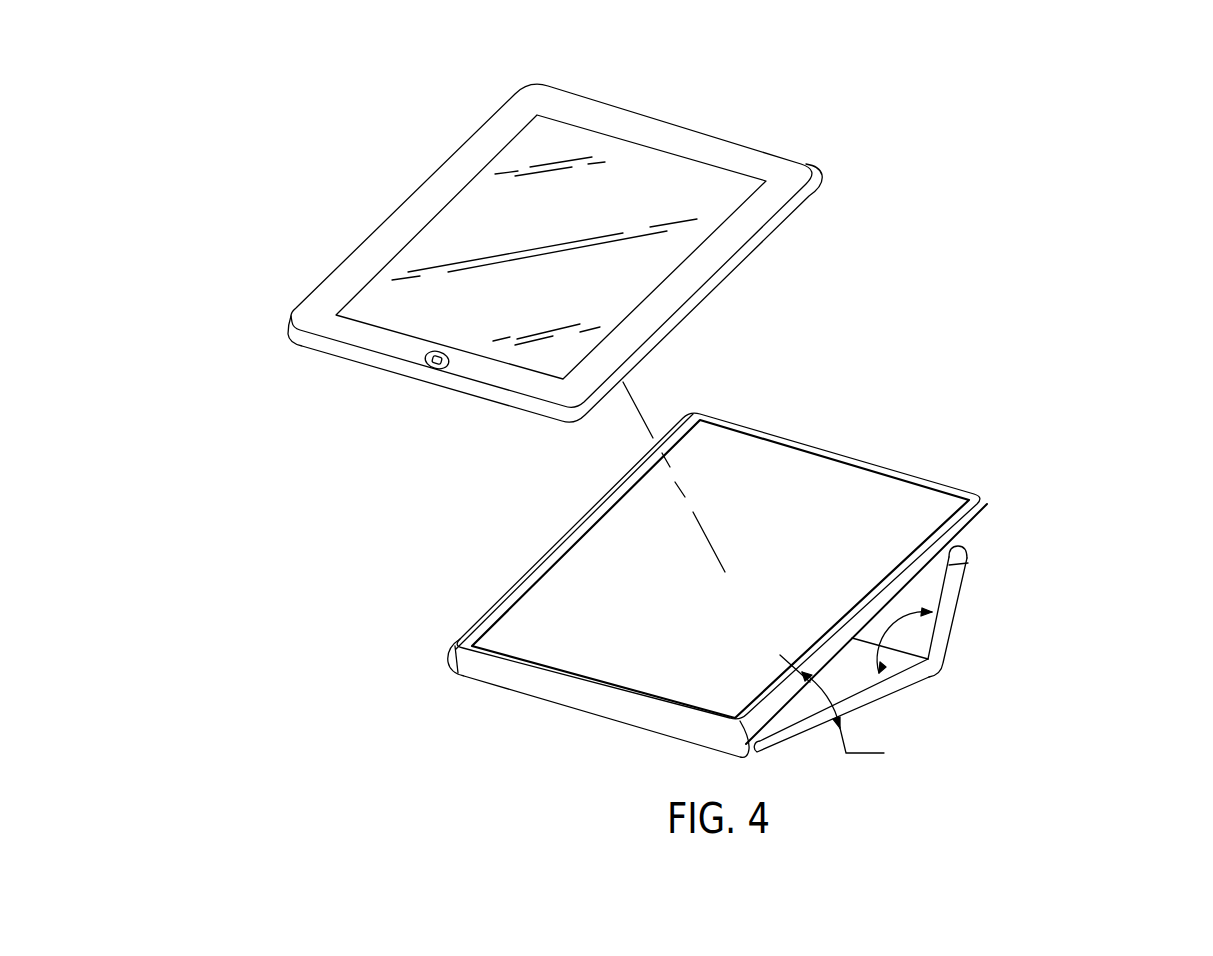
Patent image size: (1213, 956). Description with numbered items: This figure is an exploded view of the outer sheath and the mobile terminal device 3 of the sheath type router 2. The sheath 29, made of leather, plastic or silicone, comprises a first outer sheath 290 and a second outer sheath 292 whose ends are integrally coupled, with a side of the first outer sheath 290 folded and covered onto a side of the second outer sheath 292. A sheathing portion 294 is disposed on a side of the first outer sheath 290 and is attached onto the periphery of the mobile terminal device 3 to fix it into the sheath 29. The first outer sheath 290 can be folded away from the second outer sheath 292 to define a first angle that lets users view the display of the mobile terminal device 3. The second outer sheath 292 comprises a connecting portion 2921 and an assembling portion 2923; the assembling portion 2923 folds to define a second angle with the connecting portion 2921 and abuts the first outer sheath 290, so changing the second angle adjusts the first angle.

The sheath type router 2 is at (817, 558).
The mobile terminal device 3 is at (697, 124).
The sheath 29 is at (817, 588).
The first outer sheath 290 is at (774, 585).
The second outer sheath 292 is at (927, 654).
The connecting portion 2921 is at (855, 699).
The assembling portion 2923 is at (938, 625).
The sheathing portion 294 is at (518, 582).